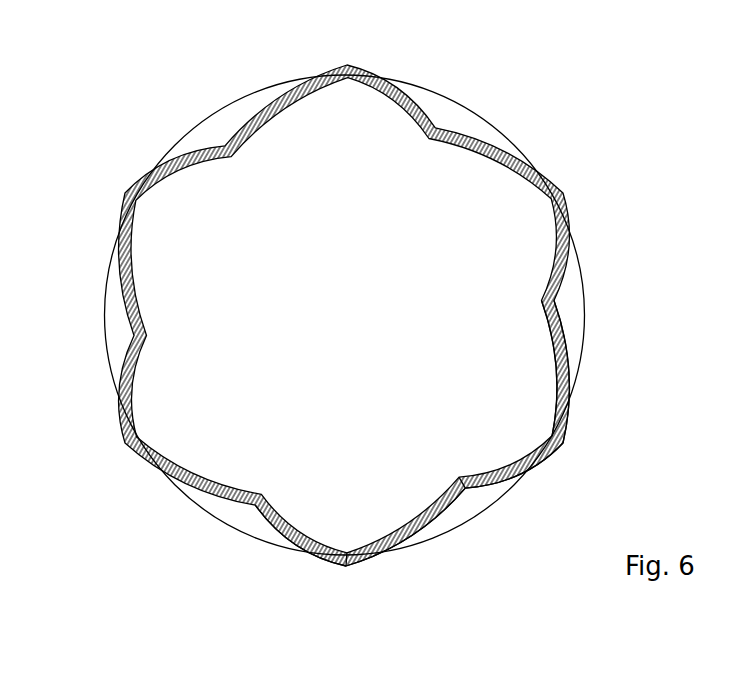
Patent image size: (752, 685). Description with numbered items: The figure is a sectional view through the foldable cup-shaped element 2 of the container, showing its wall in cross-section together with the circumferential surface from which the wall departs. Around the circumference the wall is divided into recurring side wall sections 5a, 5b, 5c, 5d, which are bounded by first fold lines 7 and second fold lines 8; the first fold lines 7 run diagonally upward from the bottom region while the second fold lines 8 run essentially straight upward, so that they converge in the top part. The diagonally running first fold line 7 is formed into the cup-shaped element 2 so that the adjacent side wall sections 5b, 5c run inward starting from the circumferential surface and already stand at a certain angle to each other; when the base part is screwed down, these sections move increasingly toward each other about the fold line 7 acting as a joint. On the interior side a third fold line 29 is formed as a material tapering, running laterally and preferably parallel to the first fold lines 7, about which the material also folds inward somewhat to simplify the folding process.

The cup-shaped element 2 is at (145, 149).
The side wall section 5a is at (302, 548).
The side wall section 5b is at (402, 537).
The side wall section 5c is at (547, 457).
The side wall section 5d is at (568, 393).
The first fold line 7 is at (466, 495).
The second fold line 8 is at (343, 568).
The third fold line 29 is at (558, 418).